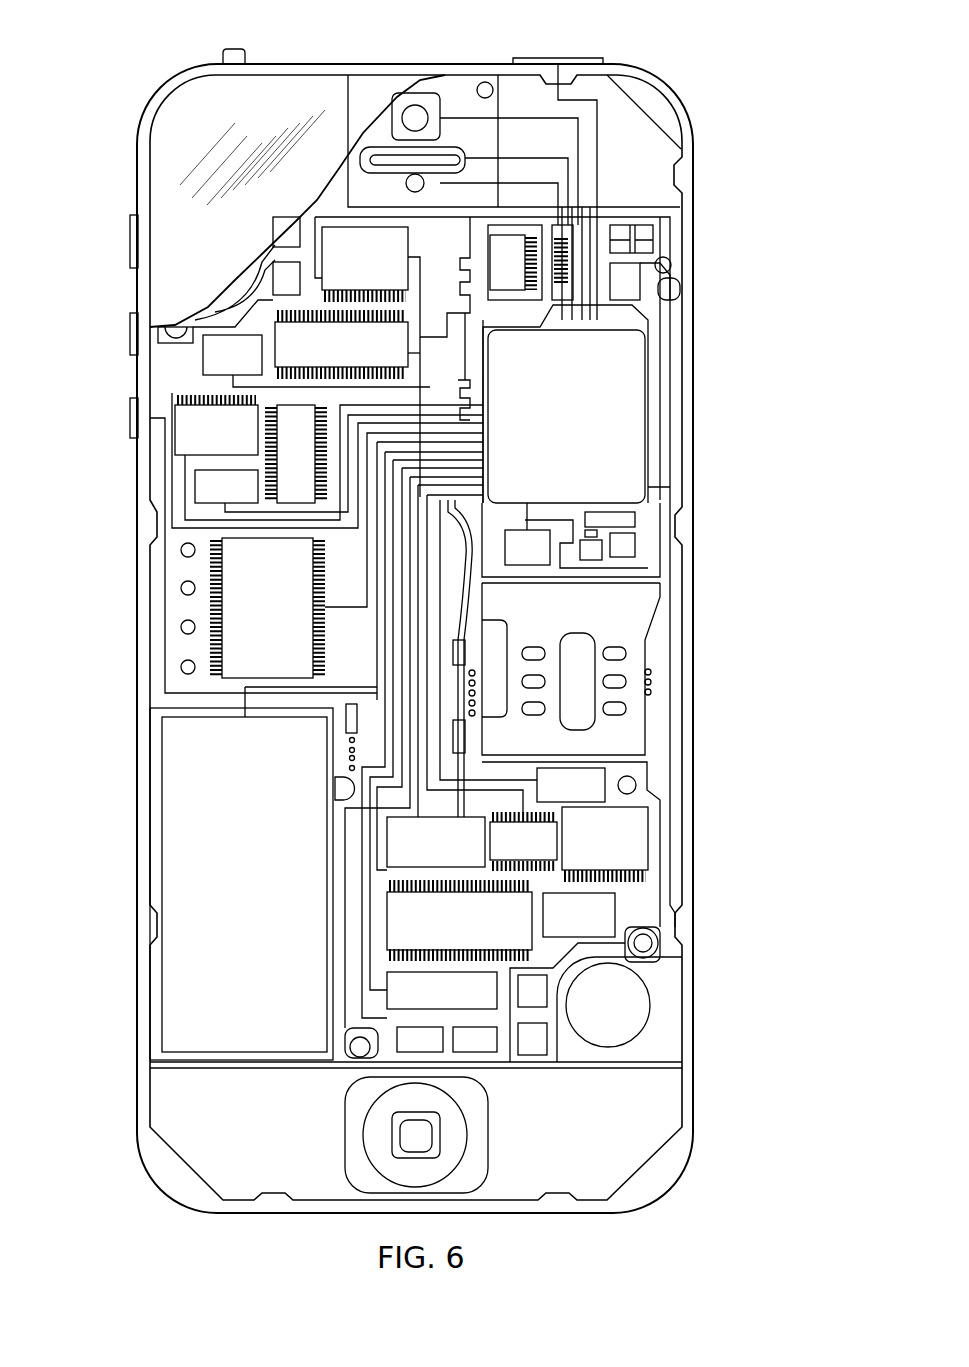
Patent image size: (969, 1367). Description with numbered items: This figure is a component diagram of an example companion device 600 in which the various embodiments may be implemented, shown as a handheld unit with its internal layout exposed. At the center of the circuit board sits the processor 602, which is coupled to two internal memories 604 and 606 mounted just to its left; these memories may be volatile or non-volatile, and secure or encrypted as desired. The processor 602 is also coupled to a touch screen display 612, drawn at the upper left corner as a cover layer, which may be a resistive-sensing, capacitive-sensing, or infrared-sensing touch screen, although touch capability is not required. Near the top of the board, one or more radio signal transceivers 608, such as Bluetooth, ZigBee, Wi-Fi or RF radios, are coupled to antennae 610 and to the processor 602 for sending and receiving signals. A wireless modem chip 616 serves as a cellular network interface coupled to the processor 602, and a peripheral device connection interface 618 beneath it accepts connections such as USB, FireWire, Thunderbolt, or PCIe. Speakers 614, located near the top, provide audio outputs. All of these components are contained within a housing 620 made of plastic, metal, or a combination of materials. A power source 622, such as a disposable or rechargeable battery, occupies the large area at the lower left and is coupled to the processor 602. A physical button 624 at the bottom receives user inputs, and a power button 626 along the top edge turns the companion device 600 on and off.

The companion device 600 is at (88, 56).
The processor 602 is at (565, 404).
The internal memory 604 is at (365, 261).
The internal memory 606 is at (341, 344).
The radio signal transceiver 608 is at (590, 240).
The antenna 610 is at (645, 280).
The touch screen display 612 is at (180, 160).
The speaker 614 is at (370, 147).
The wireless modem chip 616 is at (459, 920).
The peripheral device connection interface 618 is at (442, 990).
The housing 620 is at (695, 1088).
The power source 622 is at (241, 884).
The physical button 624 is at (423, 1145).
The power button 626 is at (561, 54).